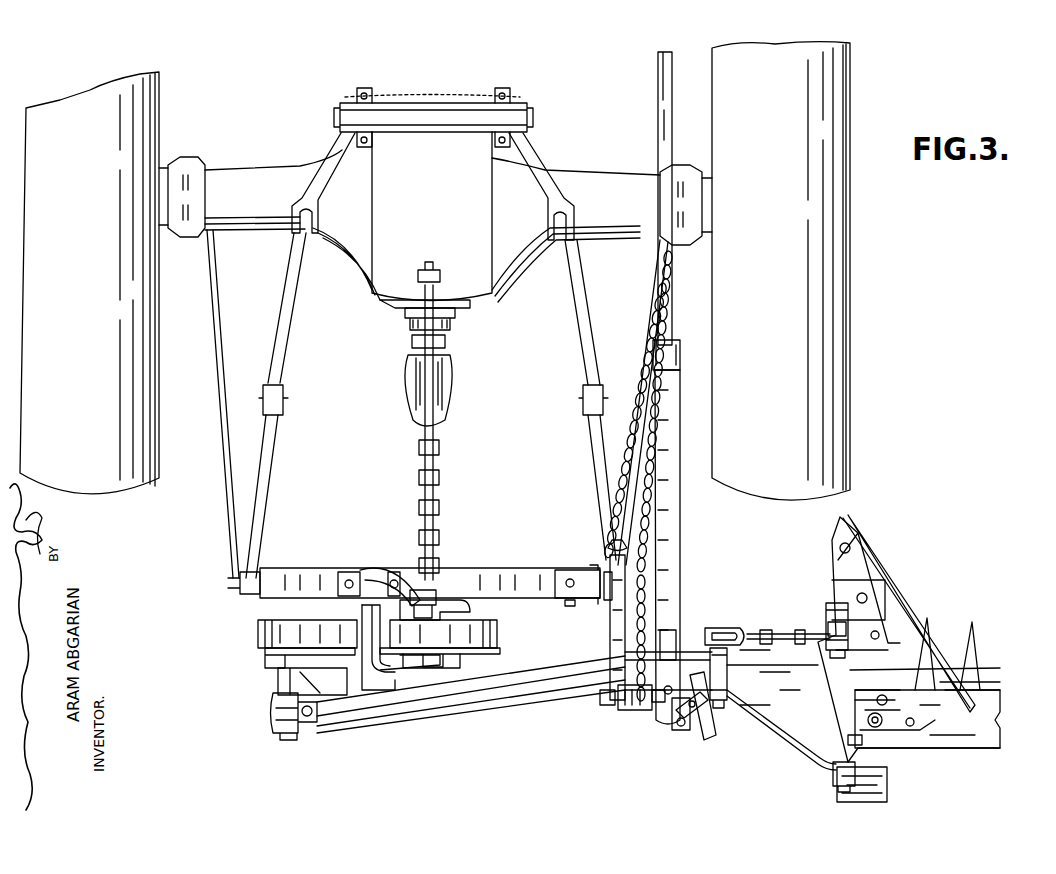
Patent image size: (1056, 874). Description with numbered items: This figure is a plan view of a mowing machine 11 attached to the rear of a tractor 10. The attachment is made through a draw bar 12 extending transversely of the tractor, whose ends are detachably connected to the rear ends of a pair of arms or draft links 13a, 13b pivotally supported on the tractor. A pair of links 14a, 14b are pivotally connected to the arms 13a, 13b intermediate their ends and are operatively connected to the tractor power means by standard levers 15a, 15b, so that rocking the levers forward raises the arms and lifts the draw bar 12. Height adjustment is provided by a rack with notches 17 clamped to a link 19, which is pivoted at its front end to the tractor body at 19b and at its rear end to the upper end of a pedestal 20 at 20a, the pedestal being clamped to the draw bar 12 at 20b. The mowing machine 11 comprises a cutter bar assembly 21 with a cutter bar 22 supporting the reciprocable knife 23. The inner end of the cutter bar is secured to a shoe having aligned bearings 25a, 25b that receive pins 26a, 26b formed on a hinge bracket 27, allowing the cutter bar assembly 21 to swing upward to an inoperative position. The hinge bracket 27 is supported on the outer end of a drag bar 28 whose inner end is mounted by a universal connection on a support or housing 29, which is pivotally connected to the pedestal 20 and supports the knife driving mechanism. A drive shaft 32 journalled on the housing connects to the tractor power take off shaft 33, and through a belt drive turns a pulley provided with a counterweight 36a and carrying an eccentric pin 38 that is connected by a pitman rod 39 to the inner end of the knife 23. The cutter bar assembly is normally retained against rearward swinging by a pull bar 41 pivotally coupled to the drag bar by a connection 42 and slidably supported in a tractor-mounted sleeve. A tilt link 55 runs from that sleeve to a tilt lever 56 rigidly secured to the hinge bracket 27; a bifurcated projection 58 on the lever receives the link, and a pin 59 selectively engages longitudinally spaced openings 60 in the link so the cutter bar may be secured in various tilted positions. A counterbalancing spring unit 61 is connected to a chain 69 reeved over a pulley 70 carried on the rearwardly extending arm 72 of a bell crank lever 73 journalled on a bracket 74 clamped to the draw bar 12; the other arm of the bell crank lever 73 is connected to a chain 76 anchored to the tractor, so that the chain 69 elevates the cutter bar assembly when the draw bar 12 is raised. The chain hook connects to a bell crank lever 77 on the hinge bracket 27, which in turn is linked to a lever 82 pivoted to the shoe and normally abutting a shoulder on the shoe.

The tractor 10 is at (855, 342).
The mowing machine 11 is at (957, 623).
The draw bar 12 is at (512, 565).
The arm or draft link 13a is at (278, 422).
The arm or draft link 13b is at (590, 422).
The link 14a is at (283, 335).
The link 14b is at (577, 343).
The lever 15a is at (318, 195).
The lever 15b is at (570, 190).
The notches 17 is at (450, 322).
The link 19 is at (432, 455).
The pivot of link 19 to tractor body 19b is at (437, 268).
The pedestal 20 is at (372, 576).
The pivot of link 19 to pedestal 20a is at (442, 578).
The clamp of pedestal to draw bar 20b is at (395, 578).
The cutter bar assembly 21 is at (1000, 650).
The cutter bar 22 is at (975, 748).
The knife 23 is at (990, 683).
The bearing 25a is at (828, 628).
The bearing 25b is at (832, 772).
The pin 26a is at (830, 612).
The pin 26b is at (888, 790).
The hinge bracket 27 is at (765, 722).
The drag bar 28 is at (555, 668).
The support or housing 29 is at (258, 633).
The drive shaft 32 is at (438, 668).
The power take off shaft 33 is at (450, 340).
The counterweight 36a is at (338, 694).
The eccentric pin 38 is at (320, 718).
The pitman rod 39 is at (470, 700).
The pull bar 41 is at (676, 556).
The connection 42 is at (672, 648).
The tilt link 55 is at (676, 526).
The tilt lever 56 is at (708, 742).
The bifurcated projection 58 is at (672, 725).
The pin 59 is at (658, 705).
The openings 60 is at (690, 735).
The counterbalancing spring unit 61 is at (606, 702).
The chain 69 is at (650, 512).
The pulley 70 is at (628, 700).
The rearwardly extending arm 72 is at (612, 625).
The bell crank lever 73 is at (608, 610).
The bracket 74 is at (568, 575).
The chain 76 is at (618, 500).
The bell crank lever 77 is at (728, 628).
The lever 82 is at (882, 640).